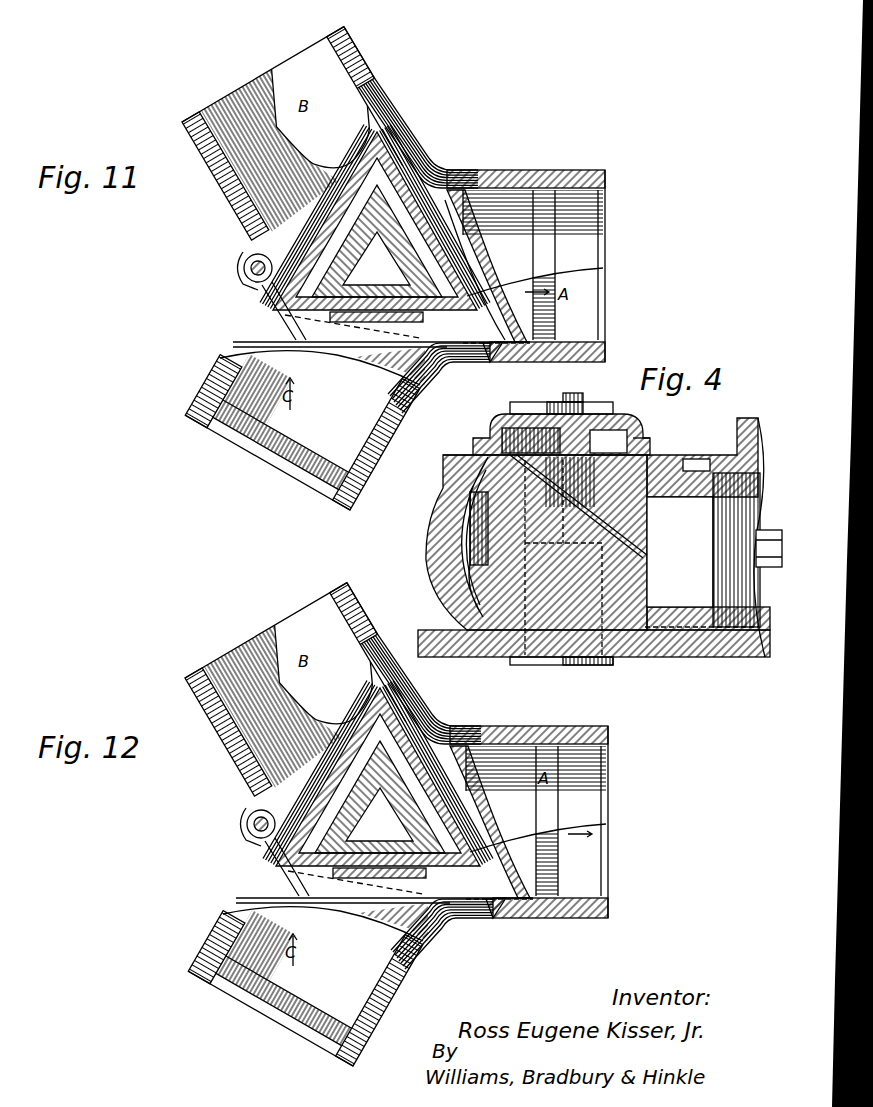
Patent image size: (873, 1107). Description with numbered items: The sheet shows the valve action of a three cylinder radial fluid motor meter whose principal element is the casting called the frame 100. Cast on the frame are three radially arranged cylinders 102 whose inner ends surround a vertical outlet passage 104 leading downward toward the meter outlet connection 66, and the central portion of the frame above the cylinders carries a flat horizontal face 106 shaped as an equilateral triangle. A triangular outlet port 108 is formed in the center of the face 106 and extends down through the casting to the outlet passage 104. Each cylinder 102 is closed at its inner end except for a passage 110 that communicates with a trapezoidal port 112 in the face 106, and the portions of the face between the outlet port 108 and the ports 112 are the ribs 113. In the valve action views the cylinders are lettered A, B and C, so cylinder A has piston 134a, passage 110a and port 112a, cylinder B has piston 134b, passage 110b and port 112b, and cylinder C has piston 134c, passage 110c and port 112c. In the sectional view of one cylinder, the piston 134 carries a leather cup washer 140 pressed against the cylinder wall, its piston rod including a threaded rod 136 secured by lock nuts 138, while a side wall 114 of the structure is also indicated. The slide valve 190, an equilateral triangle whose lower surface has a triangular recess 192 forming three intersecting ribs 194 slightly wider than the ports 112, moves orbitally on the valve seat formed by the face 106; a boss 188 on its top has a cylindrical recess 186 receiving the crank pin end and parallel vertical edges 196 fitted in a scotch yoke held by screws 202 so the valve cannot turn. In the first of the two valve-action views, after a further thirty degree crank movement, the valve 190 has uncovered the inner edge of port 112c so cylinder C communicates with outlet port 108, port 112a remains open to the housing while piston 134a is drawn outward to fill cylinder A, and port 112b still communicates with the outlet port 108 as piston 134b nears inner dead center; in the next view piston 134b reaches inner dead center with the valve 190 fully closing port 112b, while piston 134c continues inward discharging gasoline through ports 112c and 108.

In FIG. 4, the meter outlet connection 66 is at (618, 665).
In FIG. 11, the frame 100 is at (392, 84).
In FIG. 12, the frame 100 is at (256, 766).
In FIG. 4, the frame 100 is at (652, 660).
In FIG. 11, the cylinders 102 is at (348, 30).
In FIG. 12, the cylinders 102 is at (393, 838).
In FIG. 4, the cylinders 102 is at (427, 554).
In FIG. 4, the outlet passage 104 is at (538, 666).
In FIG. 11, the face 106 is at (262, 330).
In FIG. 12, the face 106 is at (352, 909).
In FIG. 4, the face 106 is at (473, 450).
In FIG. 11, the triangular outlet port 108 is at (432, 135).
In FIG. 12, the triangular outlet port 108 is at (378, 827).
In FIG. 4, the triangular outlet port 108 is at (571, 482).
In FIG. 4, the passage 110 is at (470, 523).
In FIG. 11, the passage of cylinder A 110a is at (447, 368).
In FIG. 12, the passage of cylinder A 110a is at (457, 934).
In FIG. 11, the passage of cylinder B 110b is at (418, 108).
In FIG. 12, the passage of cylinder B 110b is at (421, 689).
In FIG. 11, the passage of cylinder C 110c is at (262, 302).
In FIG. 12, the passage of cylinder C 110c is at (300, 876).
In FIG. 4, the port 112 is at (620, 440).
In FIG. 11, the port of cylinder A 112a is at (432, 378).
In FIG. 12, the port of cylinder A 112a is at (468, 951).
In FIG. 11, the port of cylinder B 112b is at (455, 185).
In FIG. 12, the port of cylinder B 112b is at (564, 822).
In FIG. 11, the port of cylinder C 112c is at (252, 285).
In FIG. 12, the port of cylinder C 112c is at (244, 867).
In FIG. 11, the ribs 113 is at (375, 227).
In FIG. 12, the ribs 113 is at (383, 836).
In FIG. 4, the side wall 114 is at (745, 418).
In FIG. 4, the pistons 134 is at (713, 565).
In FIG. 11, the piston of cylinder A 134a is at (570, 236).
In FIG. 12, the piston of cylinder A 134a is at (576, 821).
In FIG. 11, the piston of cylinder B 134b is at (249, 150).
In FIG. 12, the piston of cylinder B 134b is at (248, 708).
In FIG. 11, the piston of cylinder C 134c is at (240, 440).
In FIG. 12, the piston of cylinder C 134c is at (289, 982).
In FIG. 4, the rod 136 is at (713, 530).
In FIG. 4, the lock nuts 138 is at (735, 655).
In FIG. 4, the leather cup washer 140 is at (762, 482).
In FIG. 4, the cylindrical recess 186 is at (578, 393).
In FIG. 4, the boss 188 is at (600, 418).
In FIG. 11, the slide valve 190 is at (578, 272).
In FIG. 12, the slide valve 190 is at (538, 895).
In FIG. 4, the slide valve 190 is at (655, 440).
In FIG. 11, the triangular recess 192 is at (270, 60).
In FIG. 12, the triangular recess 192 is at (391, 787).
In FIG. 11, the ribs 194 is at (447, 160).
In FIG. 12, the ribs 194 is at (223, 823).
In FIG. 4, the ribs 194 is at (610, 418).
In FIG. 4, the parallel vertical edges 196 is at (530, 402).
In FIG. 11, the screws 202 is at (243, 268).
In FIG. 12, the screws 202 is at (230, 825).